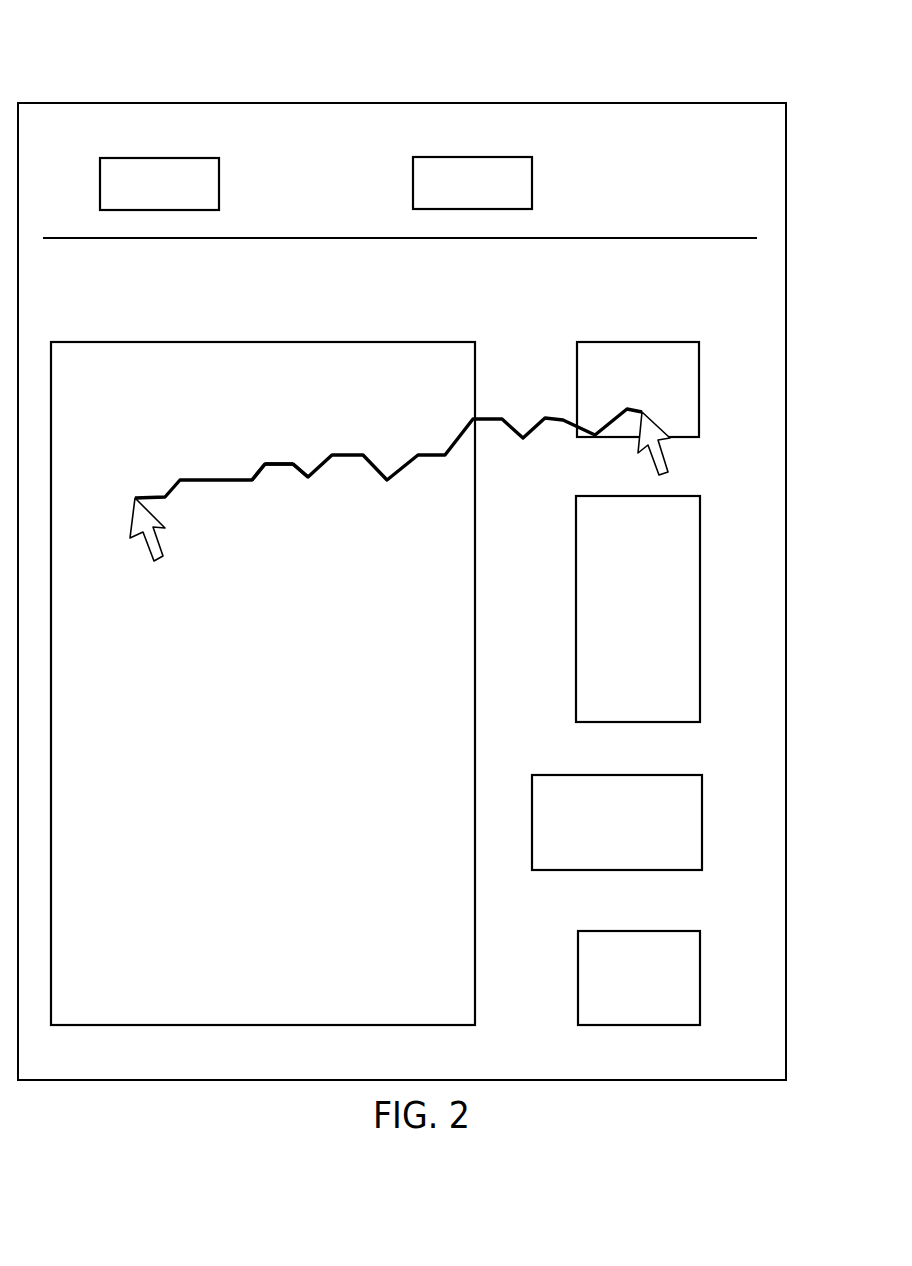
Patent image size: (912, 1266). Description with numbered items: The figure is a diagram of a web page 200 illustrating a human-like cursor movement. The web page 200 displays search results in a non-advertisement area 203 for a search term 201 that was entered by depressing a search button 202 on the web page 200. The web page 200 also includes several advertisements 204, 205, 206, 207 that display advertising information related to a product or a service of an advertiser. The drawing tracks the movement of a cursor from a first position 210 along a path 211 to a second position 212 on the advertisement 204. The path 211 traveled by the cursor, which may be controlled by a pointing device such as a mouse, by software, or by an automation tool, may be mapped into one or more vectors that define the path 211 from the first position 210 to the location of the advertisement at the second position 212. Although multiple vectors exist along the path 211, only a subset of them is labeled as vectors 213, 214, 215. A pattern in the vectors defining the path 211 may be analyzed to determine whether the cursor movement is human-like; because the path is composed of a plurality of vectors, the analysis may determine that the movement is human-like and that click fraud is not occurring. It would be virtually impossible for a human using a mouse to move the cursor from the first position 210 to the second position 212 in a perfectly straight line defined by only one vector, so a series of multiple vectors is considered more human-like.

The web page 200 is at (132, 77).
The search term 201 is at (219, 183).
The search button 202 is at (532, 183).
The non-advertisement area 203 is at (147, 342).
The advertisement 204 is at (577, 353).
The advertisement 205 is at (576, 587).
The advertisement 206 is at (537, 775).
The advertisement 207 is at (578, 977).
The first position 210 is at (160, 553).
The path 211 is at (197, 462).
The second position 212 is at (665, 462).
The vector 213 is at (257, 481).
The vector 214 is at (279, 464).
The vector 215 is at (303, 478).